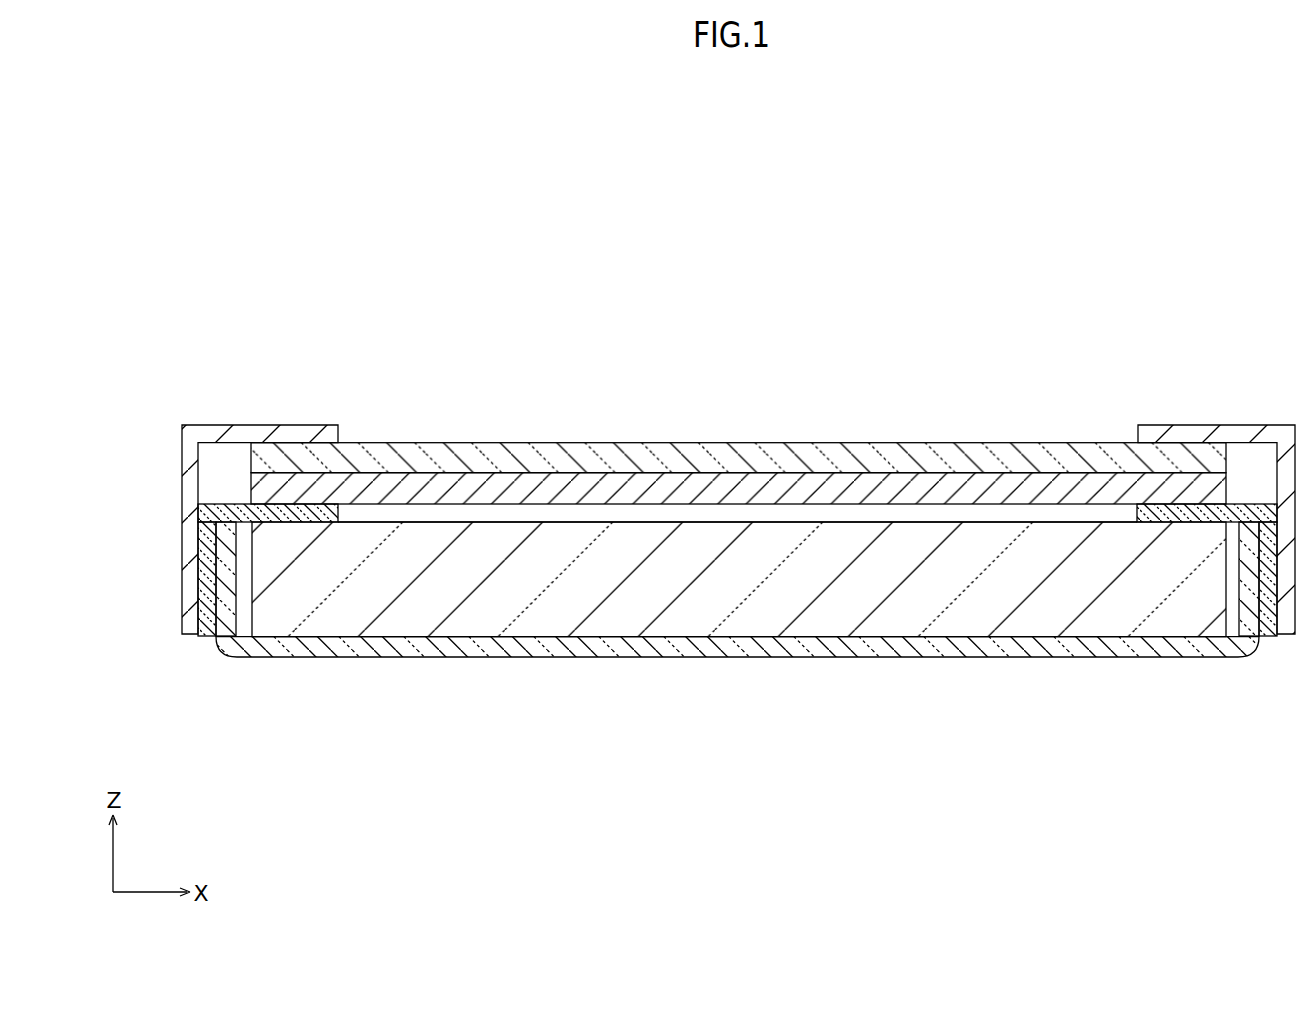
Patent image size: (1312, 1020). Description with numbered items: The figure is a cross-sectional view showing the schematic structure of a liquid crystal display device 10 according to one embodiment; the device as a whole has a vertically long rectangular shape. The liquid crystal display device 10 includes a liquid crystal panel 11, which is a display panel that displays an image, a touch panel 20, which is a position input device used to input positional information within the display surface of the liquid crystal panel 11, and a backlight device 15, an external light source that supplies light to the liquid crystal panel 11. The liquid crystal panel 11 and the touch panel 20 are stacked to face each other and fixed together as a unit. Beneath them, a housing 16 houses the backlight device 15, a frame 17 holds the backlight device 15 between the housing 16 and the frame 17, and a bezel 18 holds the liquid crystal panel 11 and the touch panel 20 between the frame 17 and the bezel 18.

The liquid crystal display device 10 is at (973, 300).
The liquid crystal panel 11 is at (1008, 490).
The backlight device 15 is at (777, 606).
The housing 16 is at (487, 640).
The frame 17 is at (200, 573).
The bezel 18 is at (187, 459).
The touch panel 20 is at (751, 452).